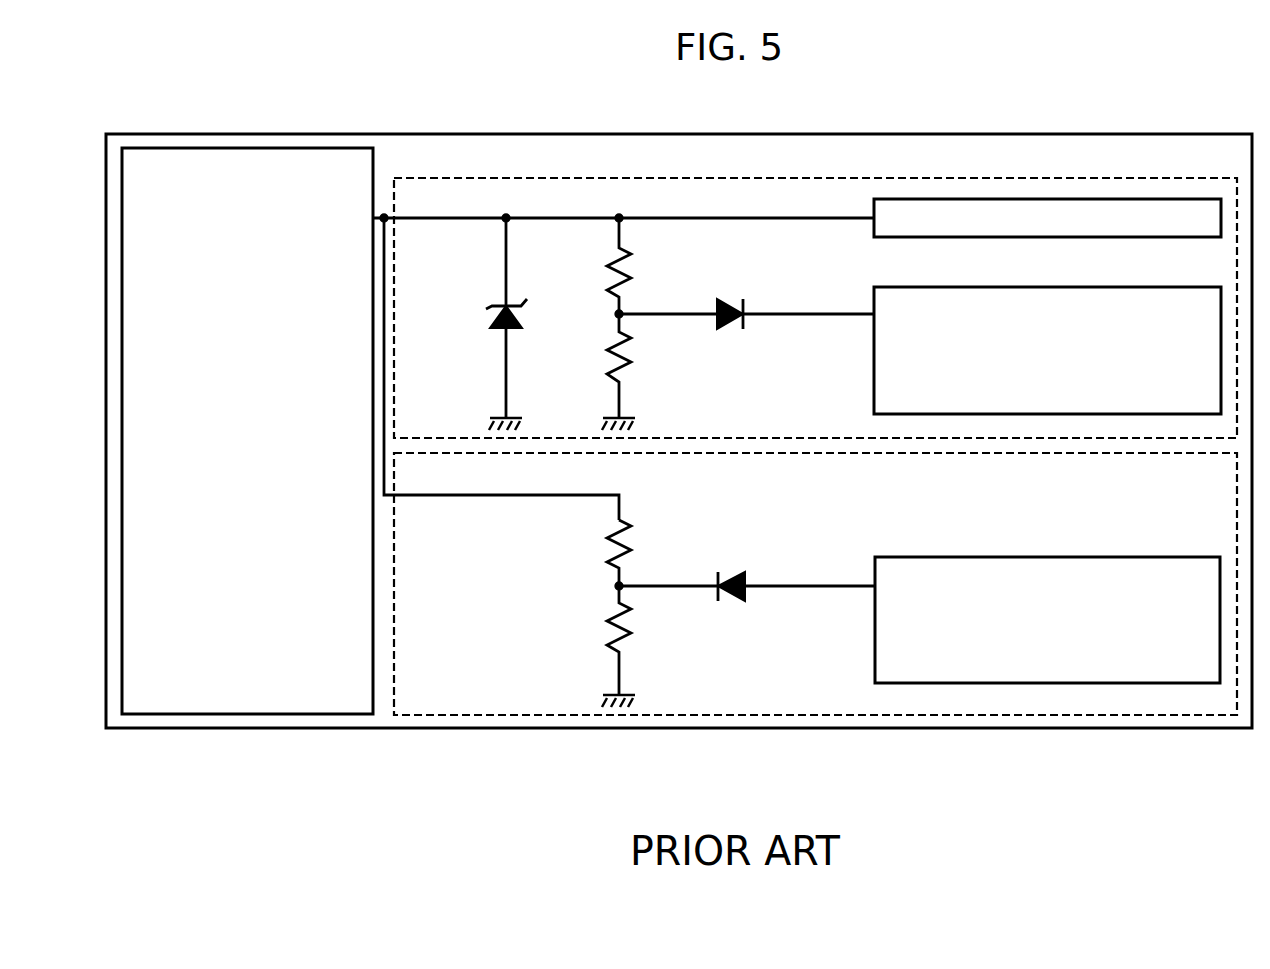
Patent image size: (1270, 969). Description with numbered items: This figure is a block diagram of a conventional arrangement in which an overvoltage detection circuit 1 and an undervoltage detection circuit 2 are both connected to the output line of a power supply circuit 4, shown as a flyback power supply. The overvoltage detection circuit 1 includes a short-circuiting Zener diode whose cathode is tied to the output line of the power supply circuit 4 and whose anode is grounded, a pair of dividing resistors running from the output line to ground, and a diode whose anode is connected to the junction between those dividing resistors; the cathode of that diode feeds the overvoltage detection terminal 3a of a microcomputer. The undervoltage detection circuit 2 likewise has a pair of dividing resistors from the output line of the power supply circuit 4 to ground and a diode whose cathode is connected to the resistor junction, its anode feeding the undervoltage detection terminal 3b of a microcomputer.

The overvoltage detection circuit 1 is at (815, 269).
The undervoltage detection circuit 2 is at (815, 626).
The overvoltage detection terminal 3a is at (1032, 287).
The undervoltage detection terminal 3b is at (1037, 557).
The power supply circuit 4 is at (302, 714).